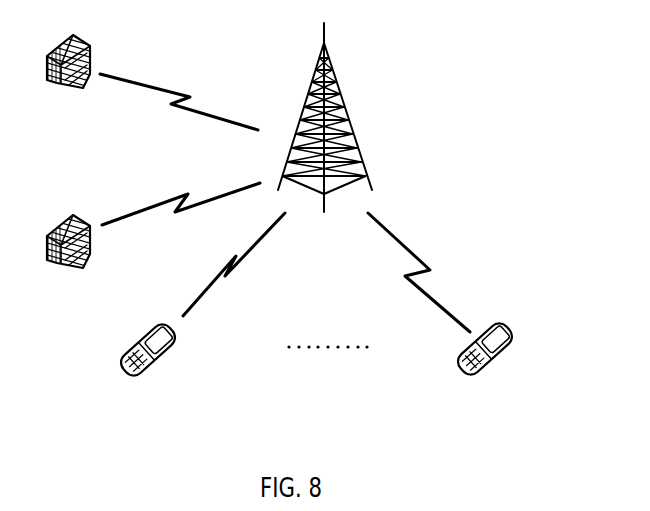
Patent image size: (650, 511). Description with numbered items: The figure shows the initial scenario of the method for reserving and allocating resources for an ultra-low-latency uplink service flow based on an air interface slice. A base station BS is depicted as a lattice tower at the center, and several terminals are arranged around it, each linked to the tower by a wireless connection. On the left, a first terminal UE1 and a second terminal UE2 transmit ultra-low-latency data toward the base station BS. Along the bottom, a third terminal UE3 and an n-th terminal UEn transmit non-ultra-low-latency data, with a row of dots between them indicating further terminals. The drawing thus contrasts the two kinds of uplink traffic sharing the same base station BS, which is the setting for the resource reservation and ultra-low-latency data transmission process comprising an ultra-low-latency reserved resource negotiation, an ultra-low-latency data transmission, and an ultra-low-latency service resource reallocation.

The base station BS is at (349, 117).
The terminal 1 UE1 is at (94, 76).
The terminal 2 UE2 is at (94, 253).
The terminal 3 UE3 is at (163, 370).
The terminal n UEn is at (502, 371).